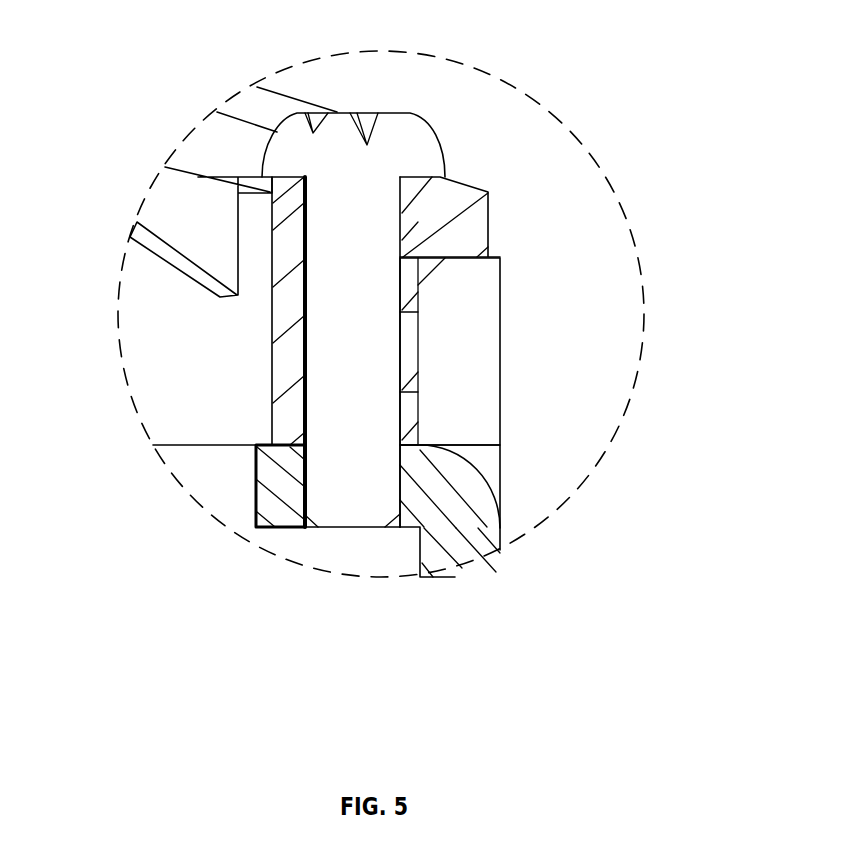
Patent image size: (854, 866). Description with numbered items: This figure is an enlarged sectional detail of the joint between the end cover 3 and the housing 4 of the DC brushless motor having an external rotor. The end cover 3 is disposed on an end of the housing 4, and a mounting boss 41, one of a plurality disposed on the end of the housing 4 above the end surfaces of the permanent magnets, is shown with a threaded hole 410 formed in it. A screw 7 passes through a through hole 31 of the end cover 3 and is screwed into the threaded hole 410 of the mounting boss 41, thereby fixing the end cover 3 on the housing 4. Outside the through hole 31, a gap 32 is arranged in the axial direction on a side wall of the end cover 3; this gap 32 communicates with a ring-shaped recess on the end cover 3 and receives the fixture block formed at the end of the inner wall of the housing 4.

The screw 7 is at (348, 277).
The end cover 3 is at (290, 343).
The through hole 31 is at (297, 287).
The gap 32 is at (408, 350).
The mounting boss 41 is at (412, 483).
The housing 4 is at (457, 540).
The threaded hole 410 is at (297, 498).